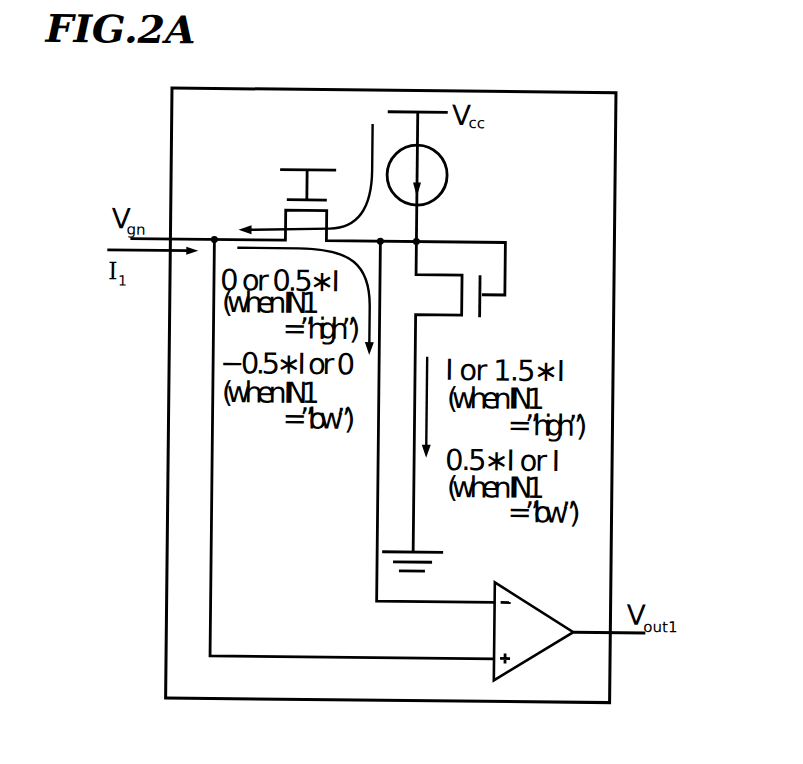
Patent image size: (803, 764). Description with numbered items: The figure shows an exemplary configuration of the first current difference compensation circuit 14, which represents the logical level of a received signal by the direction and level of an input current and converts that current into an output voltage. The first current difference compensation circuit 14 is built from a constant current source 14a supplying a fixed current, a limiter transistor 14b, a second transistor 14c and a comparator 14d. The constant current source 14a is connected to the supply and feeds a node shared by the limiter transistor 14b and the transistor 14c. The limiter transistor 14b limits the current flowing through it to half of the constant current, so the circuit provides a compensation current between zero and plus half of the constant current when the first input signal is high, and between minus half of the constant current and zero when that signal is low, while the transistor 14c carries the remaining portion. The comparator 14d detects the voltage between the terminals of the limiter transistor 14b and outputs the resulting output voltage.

The first current difference compensation circuit 14 is at (268, 88).
The constant current source 14a is at (433, 199).
The limiter transistor 14b is at (283, 207).
The transistor 14c is at (472, 315).
The comparator 14d is at (553, 611).